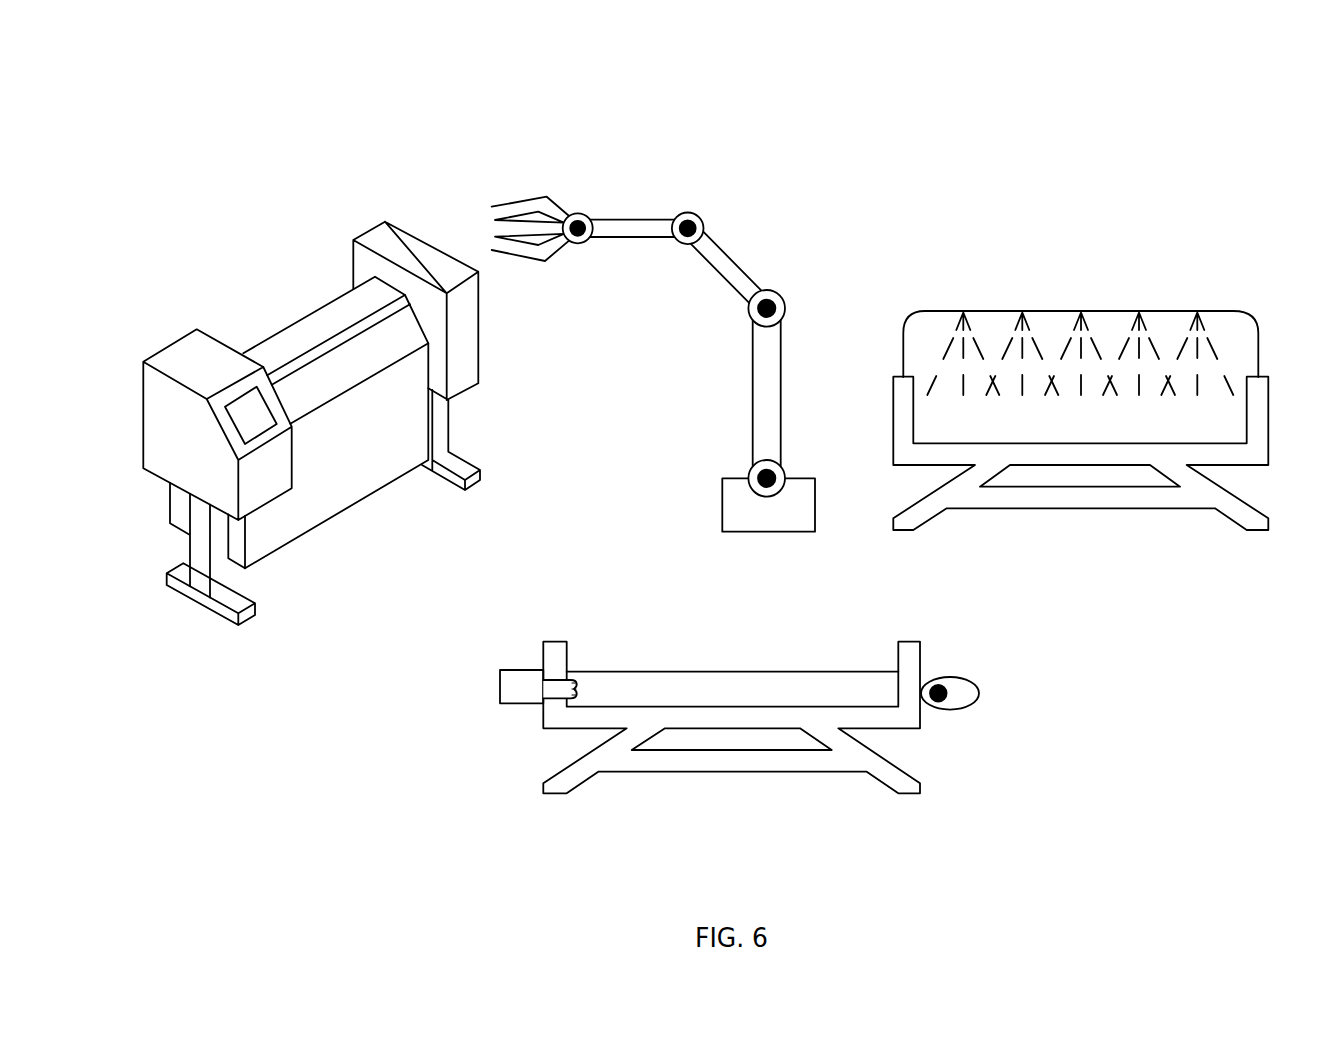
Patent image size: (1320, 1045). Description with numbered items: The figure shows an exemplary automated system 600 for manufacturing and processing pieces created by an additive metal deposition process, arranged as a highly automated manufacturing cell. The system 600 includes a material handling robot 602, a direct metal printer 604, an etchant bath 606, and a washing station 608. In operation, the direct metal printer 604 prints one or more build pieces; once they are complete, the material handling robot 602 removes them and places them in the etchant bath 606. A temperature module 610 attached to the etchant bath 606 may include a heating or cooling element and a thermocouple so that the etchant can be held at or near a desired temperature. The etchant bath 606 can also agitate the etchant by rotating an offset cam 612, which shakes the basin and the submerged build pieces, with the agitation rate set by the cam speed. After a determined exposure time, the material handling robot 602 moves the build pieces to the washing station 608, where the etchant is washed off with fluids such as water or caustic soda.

The automated system 600 is at (188, 76).
The material handling robot 602 is at (737, 243).
The direct metal printer 604 is at (293, 323).
The etchant bath 606 is at (915, 641).
The washing station 608 is at (1118, 310).
The temperature module 610 is at (500, 687).
The offset cam 612 is at (980, 695).